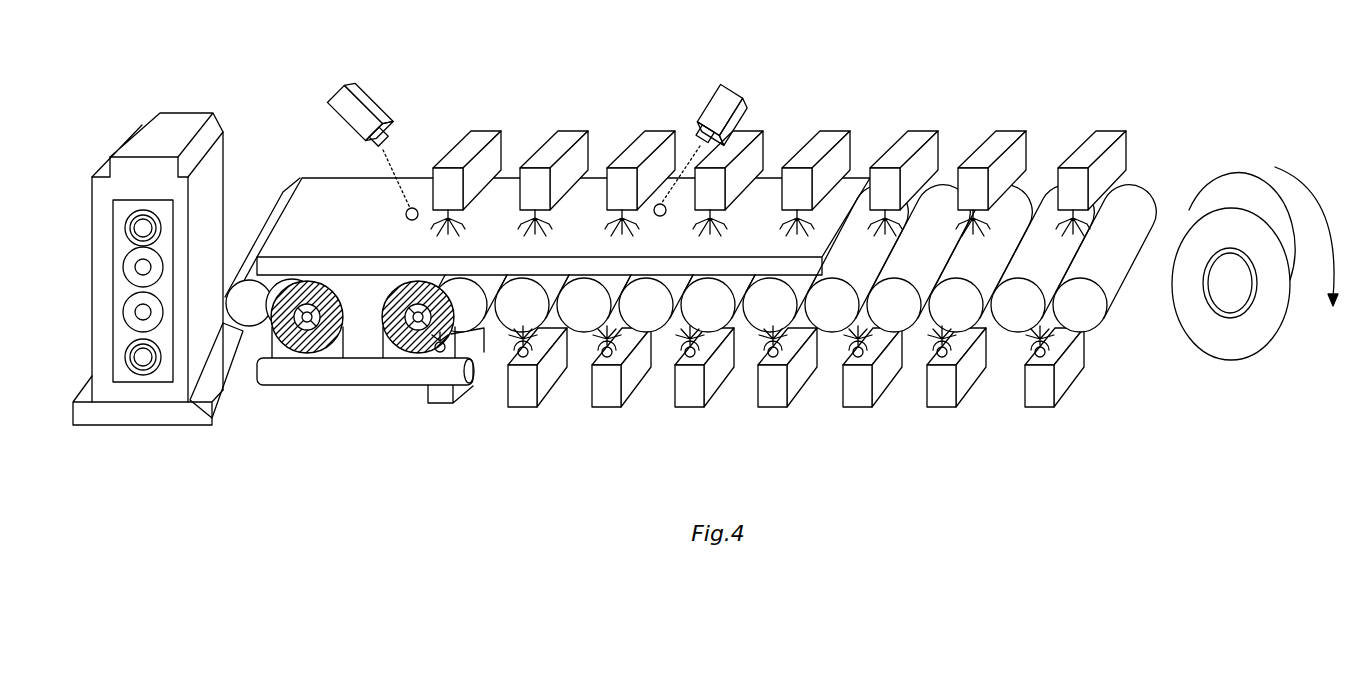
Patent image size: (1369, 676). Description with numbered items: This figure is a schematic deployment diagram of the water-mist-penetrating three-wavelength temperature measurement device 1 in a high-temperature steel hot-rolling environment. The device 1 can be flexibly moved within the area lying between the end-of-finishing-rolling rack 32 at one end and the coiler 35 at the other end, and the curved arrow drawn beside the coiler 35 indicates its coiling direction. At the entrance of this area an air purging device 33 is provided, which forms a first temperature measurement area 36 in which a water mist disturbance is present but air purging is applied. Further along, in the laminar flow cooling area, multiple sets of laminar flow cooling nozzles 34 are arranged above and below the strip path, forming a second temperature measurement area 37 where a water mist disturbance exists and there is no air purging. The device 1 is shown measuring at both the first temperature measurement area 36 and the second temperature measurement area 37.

The water-mist-penetrating three-wavelength temperature measurement device 1 is at (372, 102).
The end-of-finishing-rolling rack 32 is at (145, 425).
The air purging device 33 is at (360, 386).
The laminar flow cooling nozzle 34 is at (530, 350).
The coiler 35 is at (1243, 357).
The first temperature measurement area 36 is at (409, 220).
The second temperature measurement area 37 is at (660, 217).